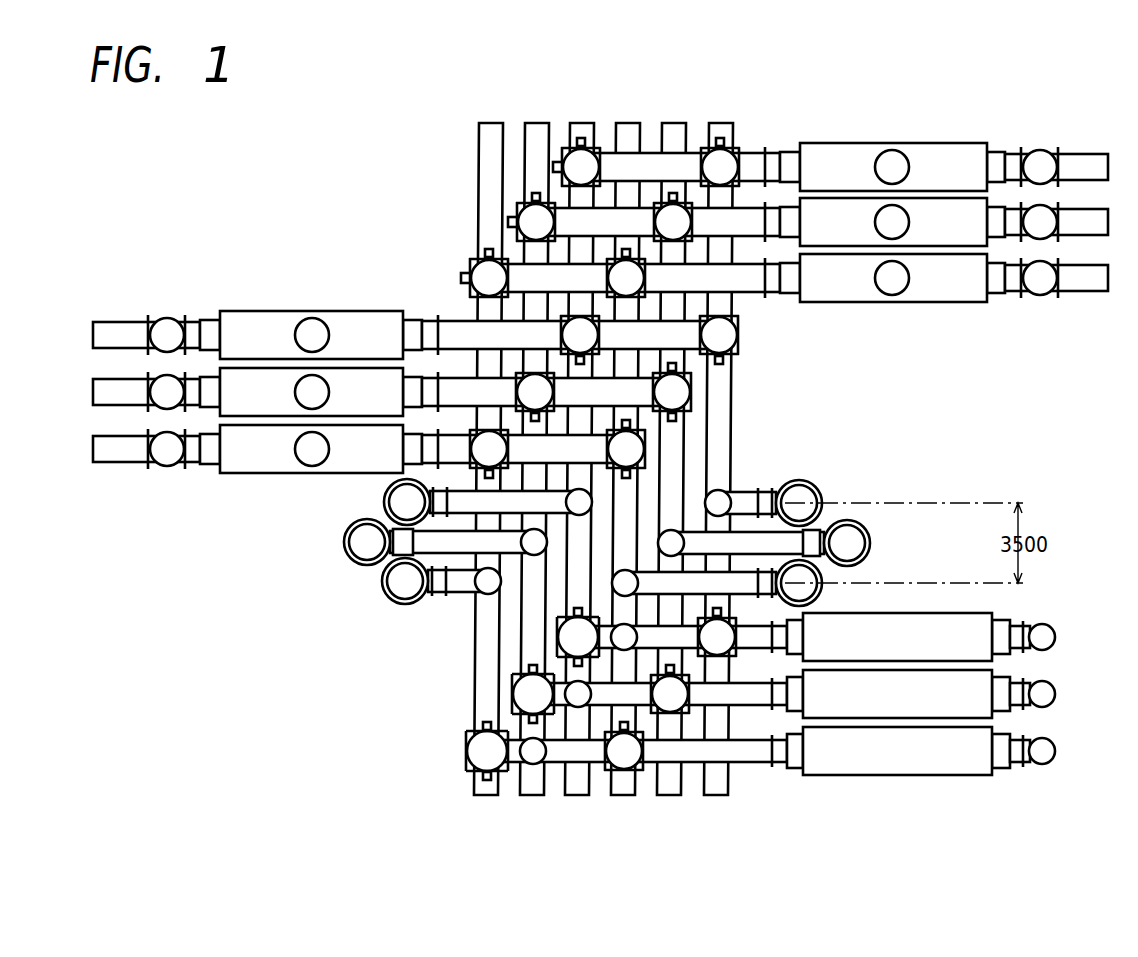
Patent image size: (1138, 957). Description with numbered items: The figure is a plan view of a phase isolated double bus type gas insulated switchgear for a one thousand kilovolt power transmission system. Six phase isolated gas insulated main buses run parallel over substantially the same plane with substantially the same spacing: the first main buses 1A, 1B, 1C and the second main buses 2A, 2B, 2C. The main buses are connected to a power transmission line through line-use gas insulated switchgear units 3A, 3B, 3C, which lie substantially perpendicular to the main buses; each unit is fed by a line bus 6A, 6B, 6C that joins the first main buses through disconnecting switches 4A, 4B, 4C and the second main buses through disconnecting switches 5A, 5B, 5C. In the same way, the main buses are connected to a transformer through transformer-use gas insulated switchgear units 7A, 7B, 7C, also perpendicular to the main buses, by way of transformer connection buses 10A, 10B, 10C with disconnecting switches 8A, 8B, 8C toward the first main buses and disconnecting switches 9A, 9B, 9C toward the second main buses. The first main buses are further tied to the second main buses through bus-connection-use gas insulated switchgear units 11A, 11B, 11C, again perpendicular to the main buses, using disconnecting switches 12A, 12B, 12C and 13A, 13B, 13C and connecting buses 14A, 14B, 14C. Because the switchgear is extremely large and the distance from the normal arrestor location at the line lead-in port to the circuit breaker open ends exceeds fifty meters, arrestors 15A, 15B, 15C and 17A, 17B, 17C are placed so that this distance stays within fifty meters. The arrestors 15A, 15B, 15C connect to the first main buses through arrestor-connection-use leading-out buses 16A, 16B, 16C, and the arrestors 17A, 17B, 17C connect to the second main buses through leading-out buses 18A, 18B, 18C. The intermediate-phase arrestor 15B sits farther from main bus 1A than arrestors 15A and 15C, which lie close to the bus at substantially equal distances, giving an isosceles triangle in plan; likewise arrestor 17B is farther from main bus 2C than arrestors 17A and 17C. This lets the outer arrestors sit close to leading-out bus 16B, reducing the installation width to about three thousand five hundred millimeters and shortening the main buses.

The first main bus 1A is at (725, 130).
The first main bus 1B is at (681, 130).
The first main bus 1C is at (632, 130).
The second main bus 2A is at (587, 130).
The second main bus 2B is at (538, 130).
The second main bus 2C is at (487, 128).
The line-use gas insulated switchgear unit 3A is at (944, 167).
The line-use gas insulated switchgear unit 3B is at (944, 222).
The line-use gas insulated switchgear unit 3C is at (944, 278).
The disconnecting switch 4A is at (720, 162).
The disconnecting switch 4B is at (673, 217).
The disconnecting switch 4C is at (626, 273).
The disconnecting switch 5A is at (581, 162).
The disconnecting switch 5B is at (536, 217).
The disconnecting switch 5C is at (489, 273).
The line bus 6A is at (666, 167).
The line bus 6B is at (644, 222).
The line bus 6C is at (620, 278).
The transformer-use gas insulated switchgear unit 7A is at (337, 335).
The transformer-use gas insulated switchgear unit 7B is at (314, 392).
The transformer-use gas insulated switchgear unit 7C is at (291, 449).
The disconnecting switch 8A is at (719, 339).
The disconnecting switch 8B is at (672, 392).
The disconnecting switch 8C is at (626, 449).
The disconnecting switch 9A is at (580, 339).
The disconnecting switch 9B is at (535, 396).
The disconnecting switch 9C is at (489, 453).
The transformer connection bus 10A is at (649, 335).
The transformer connection bus 10B is at (603, 392).
The transformer connection bus 10C is at (557, 449).
The bus-connection-use gas insulated switchgear unit 11A is at (856, 655).
The bus-connection-use gas insulated switchgear unit 11B is at (918, 710).
The bus-connection-use gas insulated switchgear unit 11C is at (975, 770).
The disconnecting switch 12A is at (713, 650).
The disconnecting switch 12B is at (667, 708).
The disconnecting switch 12C is at (618, 768).
The disconnecting switch 13A is at (562, 641).
The disconnecting switch 13B is at (518, 698).
The disconnecting switch 13C is at (475, 753).
The connecting bus 14A is at (1012, 640).
The connecting bus 14B is at (1012, 697).
The connecting bus 14C is at (1012, 752).
The arrestor 15A is at (800, 490).
The arrestor 15B is at (865, 541).
The arrestor 15C is at (810, 582).
The arrestor-connection-use leading-out bus 16A is at (750, 502).
The arrestor-connection-use leading-out bus 16B is at (812, 540).
The arrestor-connection-use leading-out bus 16C is at (752, 595).
The arrestor 17A is at (395, 504).
The arrestor 17B is at (357, 541).
The arrestor 17C is at (393, 582).
The arrestor-connection-use leading-out bus 18A is at (472, 542).
The arrestor-connection-use leading-out bus 18B is at (440, 580).
The arrestor-connection-use leading-out bus 18C is at (433, 595).